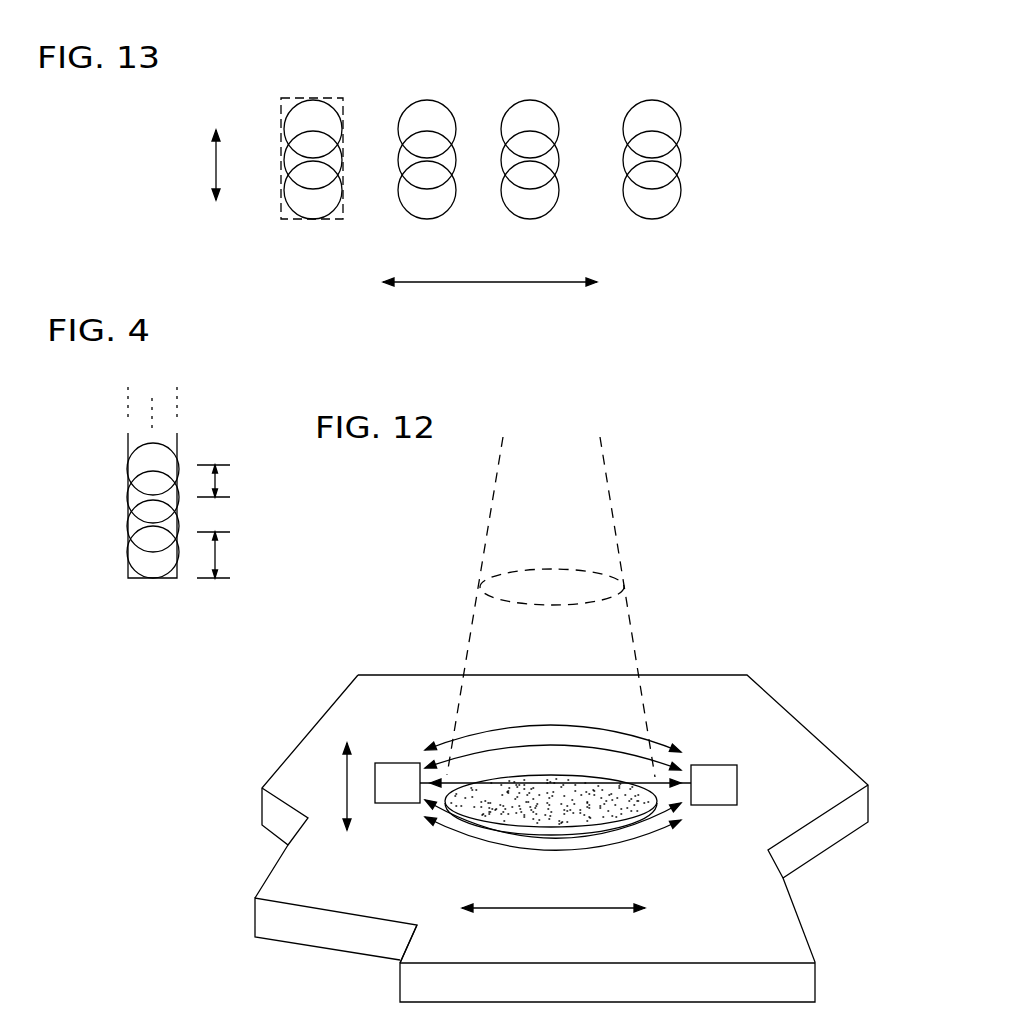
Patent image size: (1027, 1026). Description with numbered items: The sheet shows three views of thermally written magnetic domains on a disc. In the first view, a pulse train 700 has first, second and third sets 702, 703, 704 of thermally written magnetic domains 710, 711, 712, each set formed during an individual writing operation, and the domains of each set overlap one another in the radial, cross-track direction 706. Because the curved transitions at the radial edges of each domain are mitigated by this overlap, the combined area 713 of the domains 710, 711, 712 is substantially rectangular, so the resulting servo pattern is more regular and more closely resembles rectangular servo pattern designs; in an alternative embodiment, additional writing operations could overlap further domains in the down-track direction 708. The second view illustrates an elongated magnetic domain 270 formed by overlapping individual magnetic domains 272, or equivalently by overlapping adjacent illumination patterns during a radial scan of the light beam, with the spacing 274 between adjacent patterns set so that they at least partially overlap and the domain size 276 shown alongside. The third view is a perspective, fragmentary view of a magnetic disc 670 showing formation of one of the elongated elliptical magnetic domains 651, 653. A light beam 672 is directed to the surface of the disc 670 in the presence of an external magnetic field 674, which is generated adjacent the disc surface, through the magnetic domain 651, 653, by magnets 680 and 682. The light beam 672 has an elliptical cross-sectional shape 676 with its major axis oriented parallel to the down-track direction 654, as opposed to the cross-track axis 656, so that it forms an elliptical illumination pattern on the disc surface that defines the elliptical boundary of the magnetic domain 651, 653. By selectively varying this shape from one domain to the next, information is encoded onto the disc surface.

In FIG. 13, the pulse train 700 is at (693, 78).
In FIG. 13, the first set of thermally written magnetic domains 702 is at (683, 128).
In FIG. 13, the second set of thermally written magnetic domains 703 is at (683, 162).
In FIG. 13, the third set of thermally written magnetic domains 704 is at (683, 190).
In FIG. 13, the radial, cross-track direction 706 is at (214, 166).
In FIG. 13, the down-track direction 708 is at (480, 283).
In FIG. 13, the thermally written magnetic domain 710 is at (342, 195).
In FIG. 13, the thermally written magnetic domain 711 is at (342, 158).
In FIG. 13, the thermally written magnetic domain 712 is at (342, 128).
In FIG. 13, the combined area 713 is at (281, 207).
In FIG. 4, the elongated magnetic domain 270 is at (152, 580).
In FIG. 4, the individual magnetic domains 272 is at (128, 552).
In FIG. 4, the spot pitch 274 is at (217, 483).
In FIG. 4, the spot diameter 276 is at (217, 555).
In FIG. 12, the magnetic disc 670 is at (853, 772).
In FIG. 12, the light beam 672 is at (640, 528).
In FIG. 12, the elliptical cross-sectional shape 676 is at (622, 590).
In FIG. 12, the magnet 680 is at (376, 762).
In FIG. 12, the magnet 682 is at (712, 765).
In FIG. 12, the cross-track axis 656 is at (345, 787).
In FIG. 12, the external magnetic field 674 is at (462, 828).
In FIG. 12, the elongated elliptical magnetic domain 651 is at (547, 835).
In FIG. 12, the elongated elliptical magnetic domain 653 is at (537, 828).
In FIG. 12, the down-track axis 654 is at (550, 908).